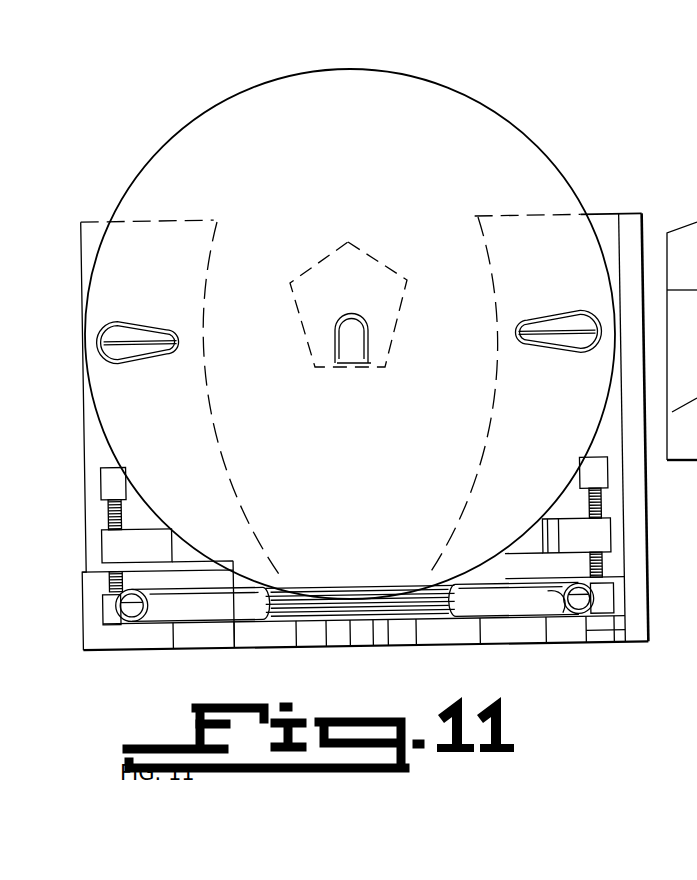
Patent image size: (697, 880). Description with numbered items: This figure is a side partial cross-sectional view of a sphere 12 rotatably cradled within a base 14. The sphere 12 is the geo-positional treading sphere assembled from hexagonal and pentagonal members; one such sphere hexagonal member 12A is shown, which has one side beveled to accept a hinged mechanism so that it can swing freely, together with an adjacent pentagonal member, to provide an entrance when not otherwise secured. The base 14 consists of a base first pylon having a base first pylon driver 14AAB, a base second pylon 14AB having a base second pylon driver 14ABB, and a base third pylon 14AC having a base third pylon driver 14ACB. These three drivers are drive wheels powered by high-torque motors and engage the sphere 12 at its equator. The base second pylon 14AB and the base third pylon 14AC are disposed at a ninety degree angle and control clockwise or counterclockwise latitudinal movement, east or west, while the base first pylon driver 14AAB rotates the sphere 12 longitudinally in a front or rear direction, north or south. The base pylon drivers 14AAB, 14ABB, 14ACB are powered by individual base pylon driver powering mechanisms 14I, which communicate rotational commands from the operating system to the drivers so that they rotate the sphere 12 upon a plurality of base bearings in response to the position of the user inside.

The sphere 12 is at (492, 105).
The sphere hexagonal member 12A is at (378, 296).
The base 14 is at (696, 496).
The base second pylon 14AB is at (591, 206).
The base second pylon driver 14ABB is at (567, 330).
The base third pylon 14AC is at (80, 222).
The base third pylon driver 14ACB is at (140, 342).
The base first pylon driver 14AAB is at (352, 350).
The base pylon driver powering mechanism 14I is at (572, 615).